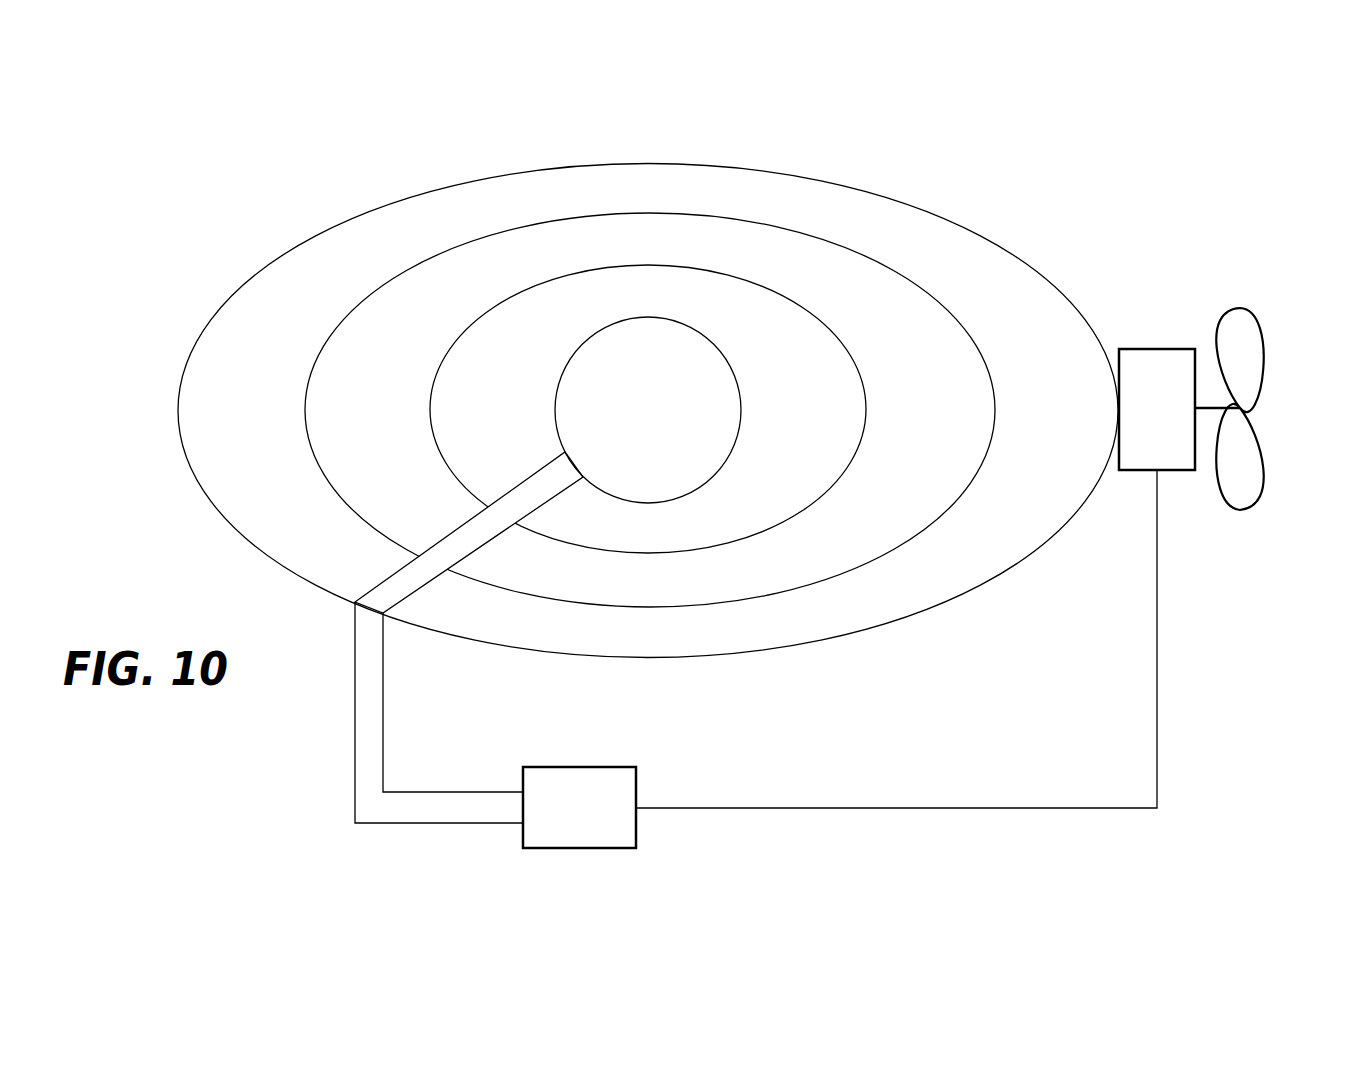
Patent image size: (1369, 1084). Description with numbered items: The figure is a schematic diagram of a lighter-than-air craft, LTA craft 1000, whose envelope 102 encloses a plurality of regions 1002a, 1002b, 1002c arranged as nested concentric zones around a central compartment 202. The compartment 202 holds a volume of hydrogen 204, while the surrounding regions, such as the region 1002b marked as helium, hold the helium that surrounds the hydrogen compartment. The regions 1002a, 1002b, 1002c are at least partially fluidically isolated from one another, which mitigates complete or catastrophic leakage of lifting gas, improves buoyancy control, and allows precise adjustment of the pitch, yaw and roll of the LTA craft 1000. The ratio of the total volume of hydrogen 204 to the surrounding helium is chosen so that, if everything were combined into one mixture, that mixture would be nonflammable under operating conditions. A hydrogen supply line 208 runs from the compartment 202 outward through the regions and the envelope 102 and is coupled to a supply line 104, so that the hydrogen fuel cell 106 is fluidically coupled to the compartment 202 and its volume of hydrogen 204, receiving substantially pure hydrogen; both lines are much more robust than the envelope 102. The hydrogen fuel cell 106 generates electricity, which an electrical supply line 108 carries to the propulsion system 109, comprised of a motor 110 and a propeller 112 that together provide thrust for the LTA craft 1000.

The LTA craft 1000 is at (1130, 145).
The envelope 102 is at (360, 212).
The supply line 104 is at (350, 727).
The hydrogen fuel cell 106 is at (575, 850).
The electrical supply line 108 is at (960, 812).
The propulsion system 109 is at (1267, 430).
The motor 110 is at (1158, 348).
The propeller 112 is at (1277, 308).
The compartment 202 is at (557, 410).
The volume of hydrogen 204 is at (648, 410).
The hydrogen supply line 208 is at (477, 548).
The region 1002a is at (798, 406).
The region 1002b is at (703, 409).
The region 1002c is at (694, 410).